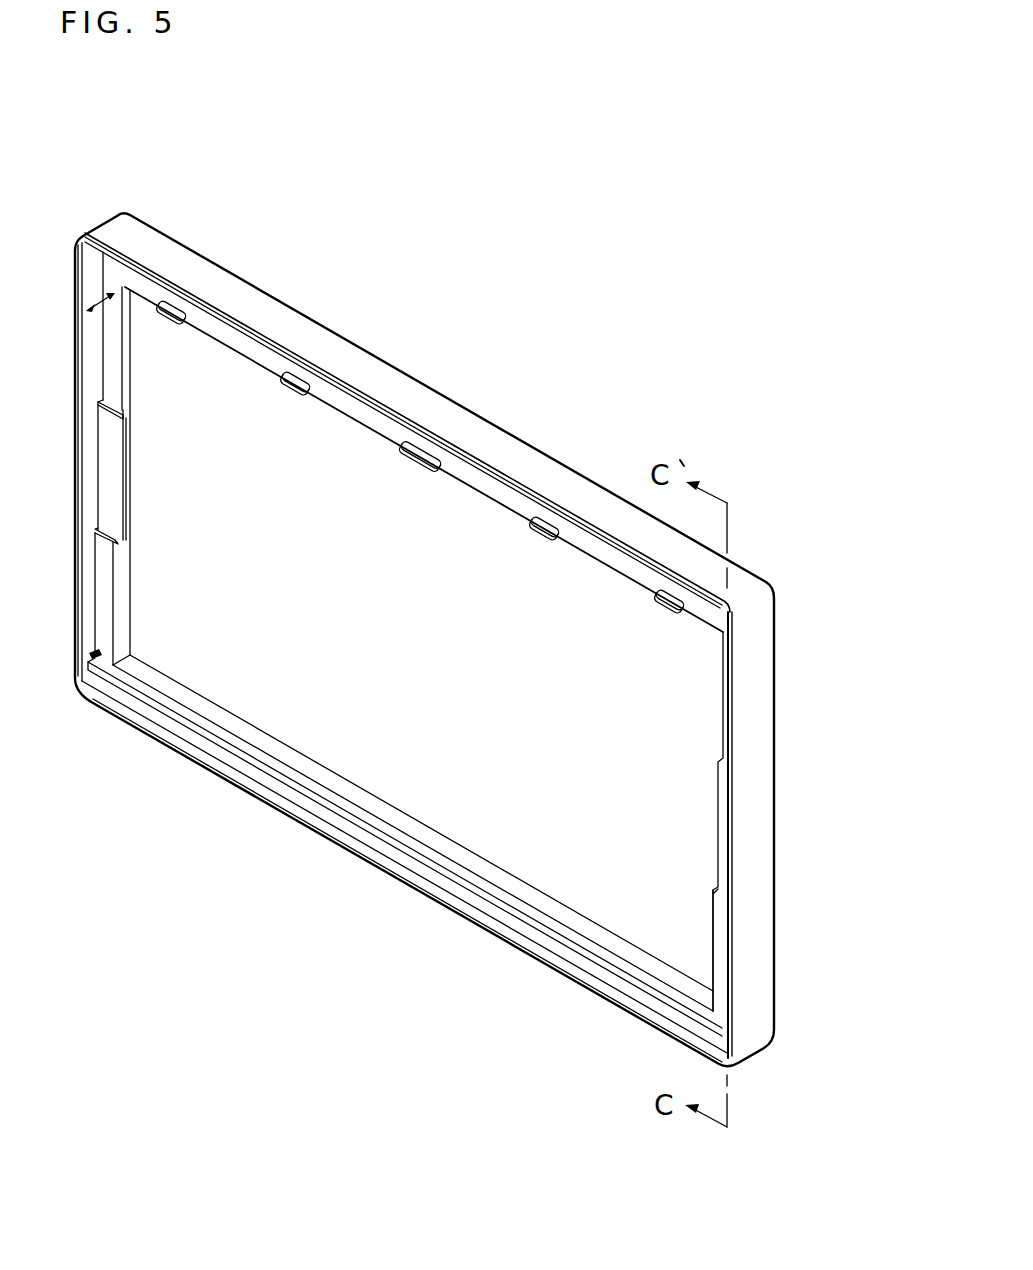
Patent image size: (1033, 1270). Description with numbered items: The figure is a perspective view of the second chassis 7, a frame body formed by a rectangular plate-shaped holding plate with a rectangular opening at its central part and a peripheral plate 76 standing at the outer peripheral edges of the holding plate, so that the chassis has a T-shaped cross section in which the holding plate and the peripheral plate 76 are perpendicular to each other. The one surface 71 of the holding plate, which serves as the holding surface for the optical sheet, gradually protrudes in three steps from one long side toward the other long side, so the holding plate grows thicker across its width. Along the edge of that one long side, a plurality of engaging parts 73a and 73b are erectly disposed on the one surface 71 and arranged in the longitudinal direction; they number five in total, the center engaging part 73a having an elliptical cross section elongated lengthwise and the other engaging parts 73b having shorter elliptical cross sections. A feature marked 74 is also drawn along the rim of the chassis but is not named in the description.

The second chassis 7 is at (795, 605).
The one surface 71 is at (487, 485).
The center engaging part 73a is at (420, 463).
The other engaging parts 73b is at (168, 323).
The rim 74 is at (132, 263).
The peripheral plate 76 is at (245, 283).